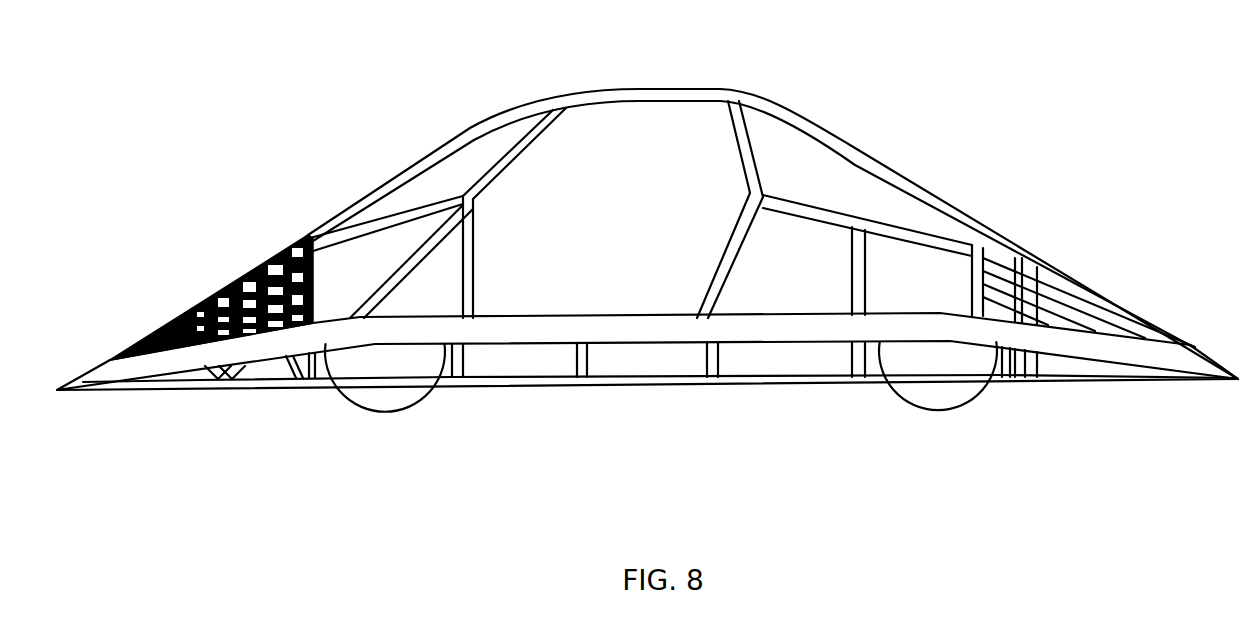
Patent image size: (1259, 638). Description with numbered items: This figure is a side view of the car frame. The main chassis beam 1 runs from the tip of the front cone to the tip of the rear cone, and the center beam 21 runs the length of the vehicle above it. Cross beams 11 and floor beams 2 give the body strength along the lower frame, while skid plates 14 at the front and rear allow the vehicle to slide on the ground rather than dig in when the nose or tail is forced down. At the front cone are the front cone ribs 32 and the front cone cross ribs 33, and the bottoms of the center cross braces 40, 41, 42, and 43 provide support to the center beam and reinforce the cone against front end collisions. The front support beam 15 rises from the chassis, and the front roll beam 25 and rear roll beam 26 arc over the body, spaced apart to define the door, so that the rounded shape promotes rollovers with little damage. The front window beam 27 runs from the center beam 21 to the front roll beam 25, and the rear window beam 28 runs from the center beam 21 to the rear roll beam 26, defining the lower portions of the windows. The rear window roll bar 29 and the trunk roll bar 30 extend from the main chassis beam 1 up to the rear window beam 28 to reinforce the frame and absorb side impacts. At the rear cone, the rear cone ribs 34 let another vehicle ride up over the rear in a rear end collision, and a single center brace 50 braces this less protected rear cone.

The main chassis beam 1 is at (110, 372).
The floor beam 2 is at (647, 378).
The cross beam 11 is at (460, 353).
The skid plate 14 is at (155, 383).
The front support beam 15 is at (398, 283).
The center beam 21 is at (636, 100).
The front roll beam 25 is at (518, 152).
The rear roll beam 26 is at (708, 283).
The front window beam 27 is at (436, 207).
The rear window beam 28 is at (825, 212).
The rear window roll bar 29 is at (852, 283).
The trunk roll bar 30 is at (972, 282).
The front cone rib 32 is at (250, 270).
The front cone cross rib 33 is at (317, 285).
The rear cone rib 34 is at (992, 272).
The center cross brace 40 is at (212, 384).
The center cross brace 41 is at (233, 383).
The center cross brace 42 is at (292, 368).
The center cross brace 43 is at (313, 367).
The center brace 50 is at (1030, 301).